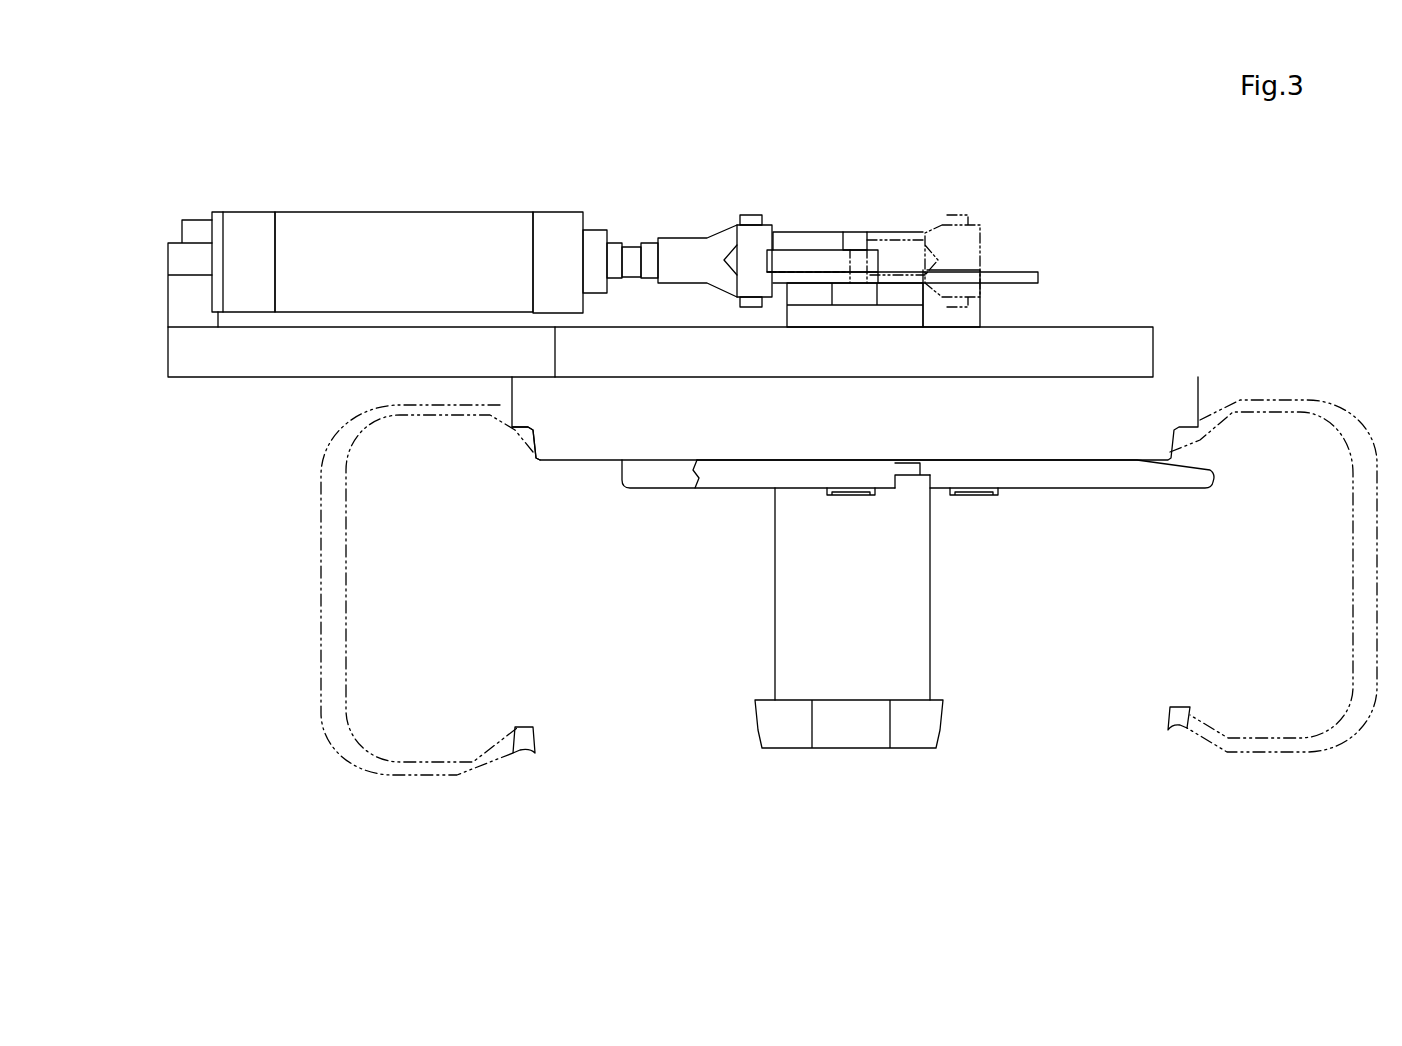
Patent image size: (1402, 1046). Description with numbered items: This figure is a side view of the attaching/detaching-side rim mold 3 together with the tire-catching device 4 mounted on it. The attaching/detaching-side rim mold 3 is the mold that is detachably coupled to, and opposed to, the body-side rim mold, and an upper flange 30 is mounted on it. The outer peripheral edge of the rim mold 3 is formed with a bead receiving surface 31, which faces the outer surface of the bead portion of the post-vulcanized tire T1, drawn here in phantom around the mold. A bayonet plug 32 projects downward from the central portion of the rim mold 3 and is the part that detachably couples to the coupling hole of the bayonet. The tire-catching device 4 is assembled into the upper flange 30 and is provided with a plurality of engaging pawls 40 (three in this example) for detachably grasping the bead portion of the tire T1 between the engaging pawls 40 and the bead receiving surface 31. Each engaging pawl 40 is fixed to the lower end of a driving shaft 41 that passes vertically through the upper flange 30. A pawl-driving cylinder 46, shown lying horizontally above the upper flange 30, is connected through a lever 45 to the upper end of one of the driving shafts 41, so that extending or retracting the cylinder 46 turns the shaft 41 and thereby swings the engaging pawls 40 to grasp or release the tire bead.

The pawl-driving cylinder 46 is at (393, 226).
The tire-catching device 4 is at (704, 226).
The lever 45 is at (806, 262).
The driving shaft 41 is at (870, 297).
The upper flange 30 is at (1116, 338).
The attaching/detaching-side rim mold 3 is at (572, 453).
The bead receiving surface 31 is at (520, 430).
The engaging pawl 40 is at (640, 478).
The bayonet plug 32 is at (922, 630).
The post-vulcanized tire T1 is at (1274, 397).